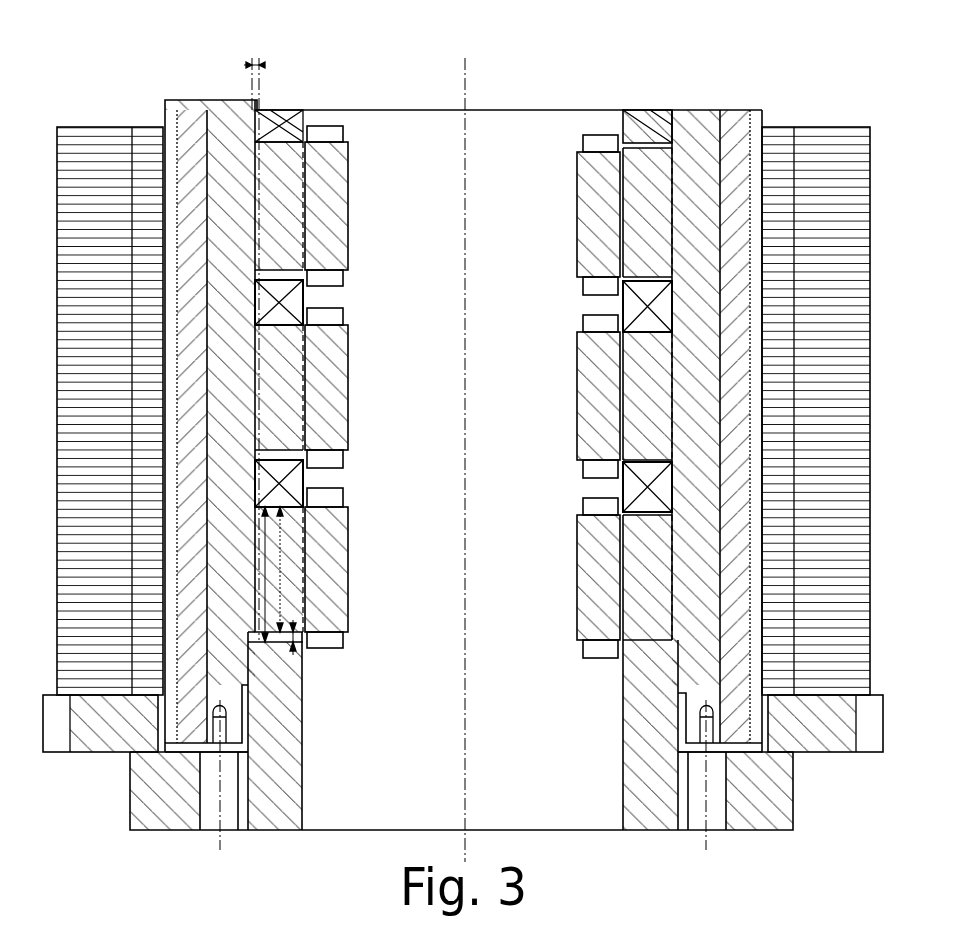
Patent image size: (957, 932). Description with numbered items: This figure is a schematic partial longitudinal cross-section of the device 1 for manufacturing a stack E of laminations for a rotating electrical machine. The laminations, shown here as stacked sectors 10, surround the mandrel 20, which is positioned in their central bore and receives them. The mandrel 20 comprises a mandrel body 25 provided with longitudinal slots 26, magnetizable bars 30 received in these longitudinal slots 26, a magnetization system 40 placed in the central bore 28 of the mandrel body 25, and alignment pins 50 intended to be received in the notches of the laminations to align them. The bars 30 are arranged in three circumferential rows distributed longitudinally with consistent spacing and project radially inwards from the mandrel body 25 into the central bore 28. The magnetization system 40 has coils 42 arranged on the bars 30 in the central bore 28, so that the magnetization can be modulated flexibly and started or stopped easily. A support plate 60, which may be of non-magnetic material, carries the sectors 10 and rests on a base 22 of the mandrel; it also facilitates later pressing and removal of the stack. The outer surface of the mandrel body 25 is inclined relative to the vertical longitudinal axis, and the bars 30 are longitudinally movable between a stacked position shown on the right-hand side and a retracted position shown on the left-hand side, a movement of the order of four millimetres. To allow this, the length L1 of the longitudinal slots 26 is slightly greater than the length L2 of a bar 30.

The device 1 is at (722, 90).
The stacked sectors 10 is at (95, 140).
The mandrel 20 is at (387, 100).
The base 22 is at (160, 795).
The mandrel body 25 is at (640, 128).
The longitudinal slots 26 is at (290, 272).
The central bore 28 is at (522, 399).
The bars 30 is at (640, 218).
The magnetization system 40 is at (353, 648).
The coils 42 is at (340, 278).
The alignment pins 50 is at (196, 125).
The support plate 60 is at (90, 735).
The stack of laminations E is at (68, 118).
The length of the longitudinal slots L1 is at (335, 605).
The length of a bar L2 is at (335, 540).